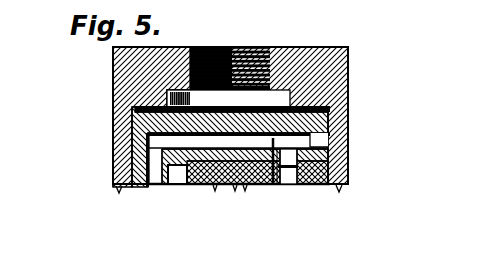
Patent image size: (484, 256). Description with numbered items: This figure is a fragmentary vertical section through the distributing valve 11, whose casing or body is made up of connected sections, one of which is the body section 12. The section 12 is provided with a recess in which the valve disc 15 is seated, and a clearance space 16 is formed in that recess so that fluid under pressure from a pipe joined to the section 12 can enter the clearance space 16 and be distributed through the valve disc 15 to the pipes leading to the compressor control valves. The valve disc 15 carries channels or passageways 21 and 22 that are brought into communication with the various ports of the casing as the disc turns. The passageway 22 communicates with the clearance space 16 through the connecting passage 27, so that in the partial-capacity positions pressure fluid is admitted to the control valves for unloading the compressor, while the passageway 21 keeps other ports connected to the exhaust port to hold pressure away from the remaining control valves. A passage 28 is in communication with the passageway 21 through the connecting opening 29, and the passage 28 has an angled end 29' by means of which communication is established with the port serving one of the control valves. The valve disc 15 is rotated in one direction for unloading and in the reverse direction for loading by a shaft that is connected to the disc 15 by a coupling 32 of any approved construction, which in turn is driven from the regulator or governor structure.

The distributing valve 11 is at (352, 90).
The body section 12 is at (113, 82).
The clearance space 16 is at (135, 110).
The valve disc 15 is at (132, 132).
The connecting passage 27 is at (158, 163).
The angled end 29' is at (131, 180).
The connecting opening 29 is at (276, 158).
The coupling 32 is at (238, 186).
The passageway 22 is at (175, 185).
The passageway 21 is at (288, 176).
The passage 28 is at (268, 142).